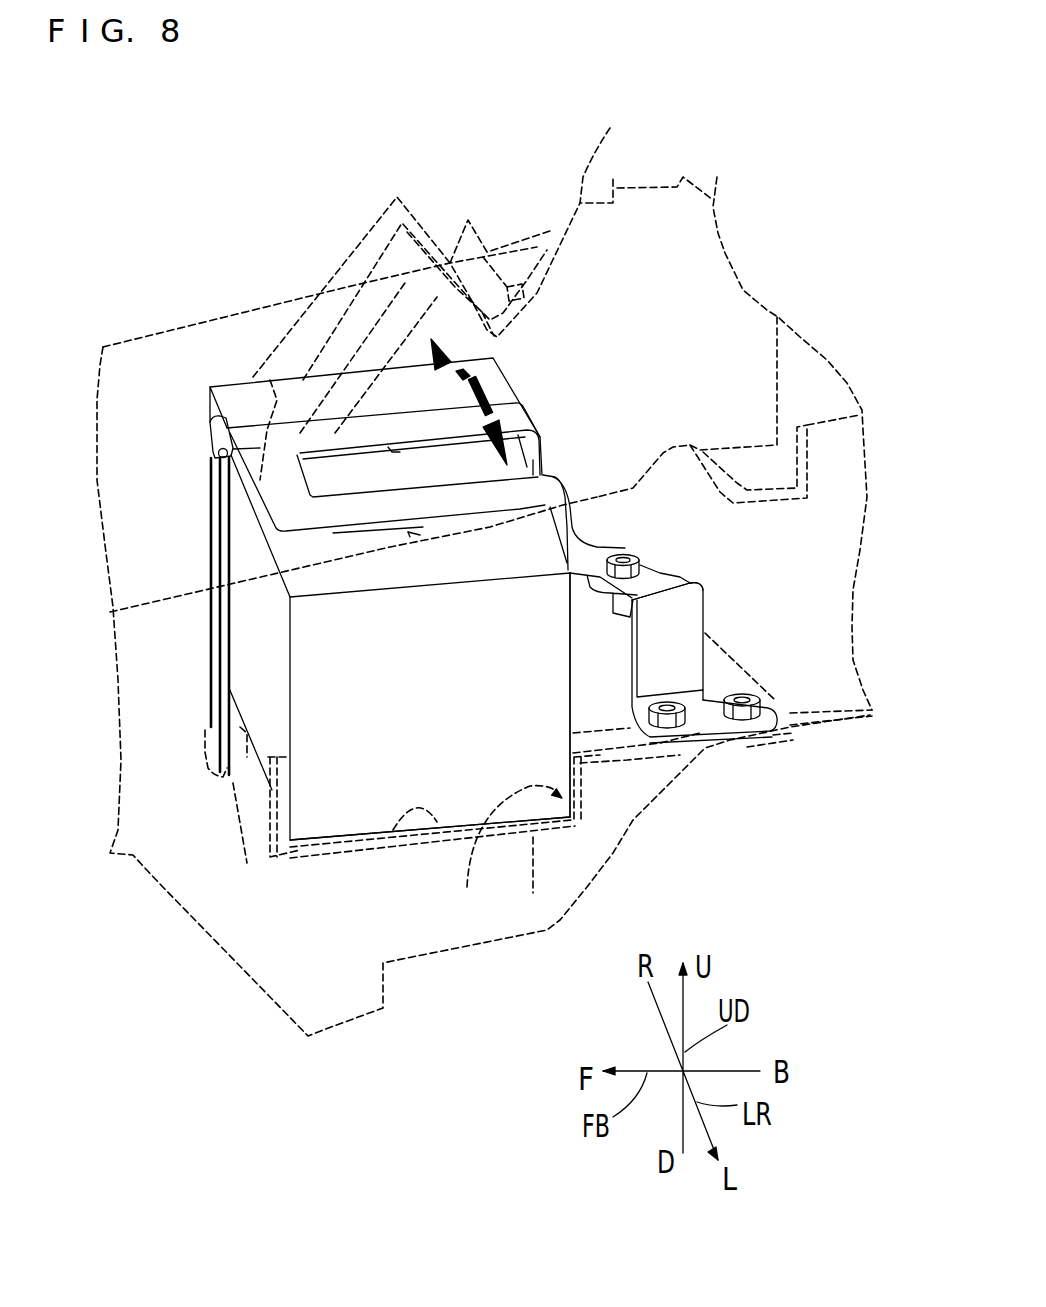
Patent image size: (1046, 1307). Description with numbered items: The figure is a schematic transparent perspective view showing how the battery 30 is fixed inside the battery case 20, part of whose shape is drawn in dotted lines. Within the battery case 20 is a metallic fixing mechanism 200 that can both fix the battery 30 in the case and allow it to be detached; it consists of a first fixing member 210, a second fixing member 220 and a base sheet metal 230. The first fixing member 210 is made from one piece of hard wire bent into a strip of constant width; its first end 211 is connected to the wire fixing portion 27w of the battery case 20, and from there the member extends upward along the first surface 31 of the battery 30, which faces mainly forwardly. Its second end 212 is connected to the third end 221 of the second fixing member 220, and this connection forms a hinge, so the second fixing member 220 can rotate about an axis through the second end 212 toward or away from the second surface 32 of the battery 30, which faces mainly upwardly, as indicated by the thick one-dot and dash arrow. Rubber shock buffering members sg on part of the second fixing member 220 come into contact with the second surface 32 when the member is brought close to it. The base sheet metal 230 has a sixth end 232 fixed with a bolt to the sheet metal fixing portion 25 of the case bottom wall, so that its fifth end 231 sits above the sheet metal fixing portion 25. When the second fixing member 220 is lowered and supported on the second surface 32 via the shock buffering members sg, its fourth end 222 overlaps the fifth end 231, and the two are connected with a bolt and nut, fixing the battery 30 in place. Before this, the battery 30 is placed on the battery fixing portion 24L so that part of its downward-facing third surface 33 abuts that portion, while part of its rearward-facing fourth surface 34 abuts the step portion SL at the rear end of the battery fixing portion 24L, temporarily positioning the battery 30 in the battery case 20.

The battery case 20 is at (726, 406).
The fixing mechanism 200 is at (183, 428).
The first fixing member 210 is at (213, 556).
The first end 211 is at (223, 780).
The second end 212 is at (210, 458).
The second fixing member 220 is at (520, 413).
The third end 221 is at (208, 425).
The fourth end 222 is at (643, 587).
The base sheet metal 230 is at (687, 670).
The fifth end 231 is at (650, 590).
The sixth end 232 is at (707, 727).
The sheet metal fixing portion 25 is at (707, 752).
The battery 30 is at (447, 697).
The first surface 31 is at (257, 622).
The second surface 32 is at (503, 537).
The third surface 33 is at (330, 823).
The fourth surface 34 is at (560, 700).
The battery fixing portion 24L is at (377, 857).
The step portion SL is at (467, 887).
The wire fixing portion 27w is at (223, 750).
The shock buffering members sg is at (408, 537).